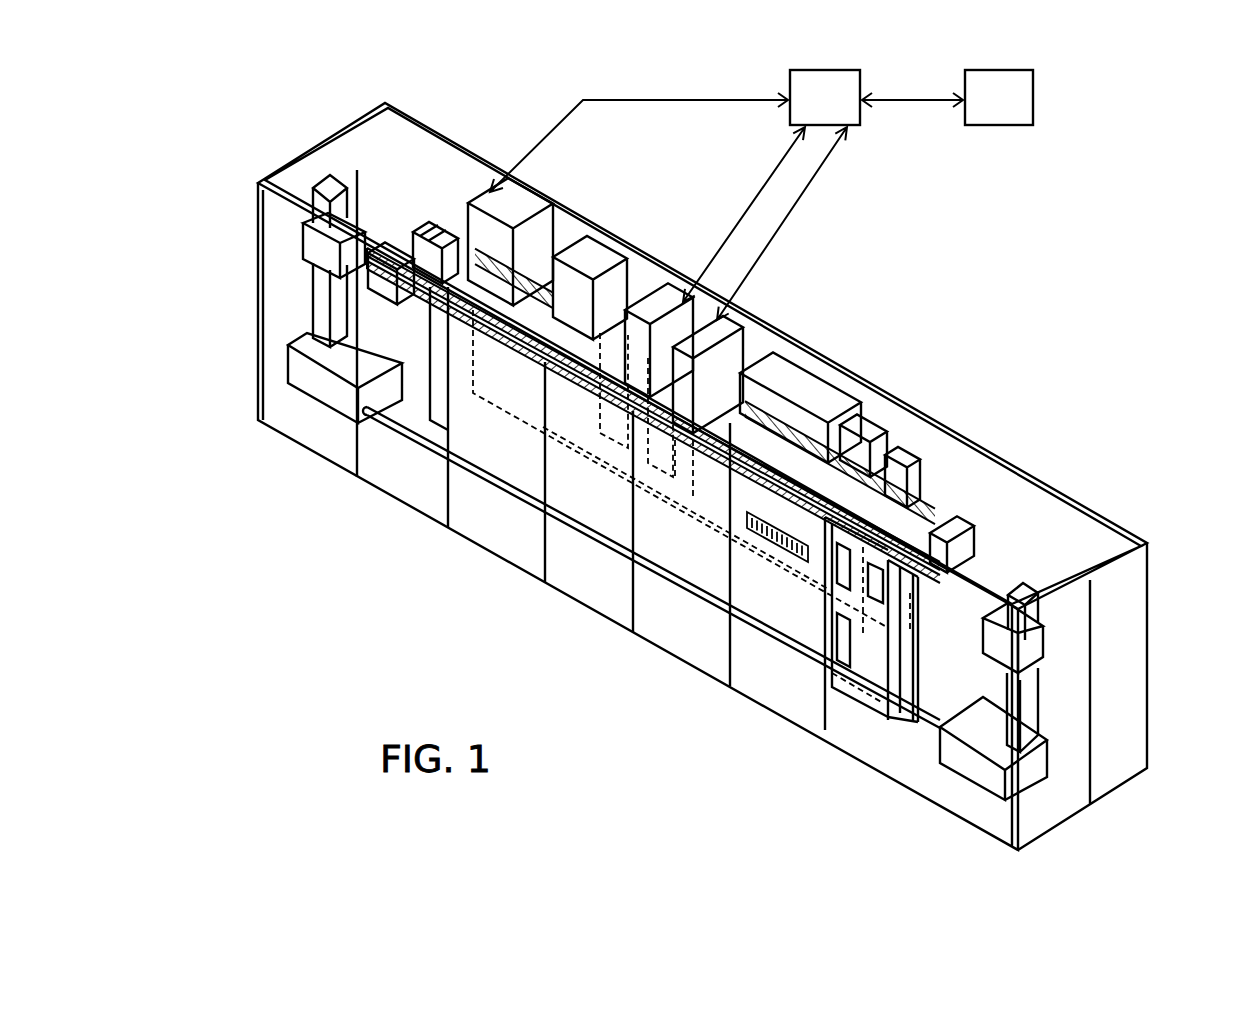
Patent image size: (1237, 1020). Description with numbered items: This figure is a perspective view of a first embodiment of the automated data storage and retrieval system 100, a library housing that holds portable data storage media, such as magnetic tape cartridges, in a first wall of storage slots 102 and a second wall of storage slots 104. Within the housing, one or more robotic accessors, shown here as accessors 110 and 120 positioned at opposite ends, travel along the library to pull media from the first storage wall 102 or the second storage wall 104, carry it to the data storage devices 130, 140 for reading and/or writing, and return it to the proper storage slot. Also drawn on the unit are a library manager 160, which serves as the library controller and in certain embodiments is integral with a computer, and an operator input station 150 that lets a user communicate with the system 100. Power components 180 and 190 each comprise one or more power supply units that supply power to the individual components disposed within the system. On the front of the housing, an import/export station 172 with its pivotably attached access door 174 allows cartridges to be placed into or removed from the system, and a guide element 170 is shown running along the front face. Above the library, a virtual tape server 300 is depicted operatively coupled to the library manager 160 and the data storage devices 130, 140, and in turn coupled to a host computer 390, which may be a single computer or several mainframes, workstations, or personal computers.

The automated data storage and retrieval system 100 is at (761, 768).
The first wall of storage slots 102 is at (550, 234).
The second wall of storage slots 104 is at (470, 432).
The accessor 110 is at (300, 243).
The accessor 120 is at (1043, 647).
The data storage device 130 is at (668, 282).
The data storage device 140 is at (723, 317).
The operator input station 150 is at (618, 238).
The library manager 160 is at (518, 232).
The guide rail 170 is at (565, 520).
The import/export station 172 is at (887, 703).
The access door 174 is at (852, 670).
The power component 180 is at (948, 522).
The power component 190 is at (937, 560).
The virtual tape server 300 is at (726, 195).
The host computer 390 is at (999, 97).